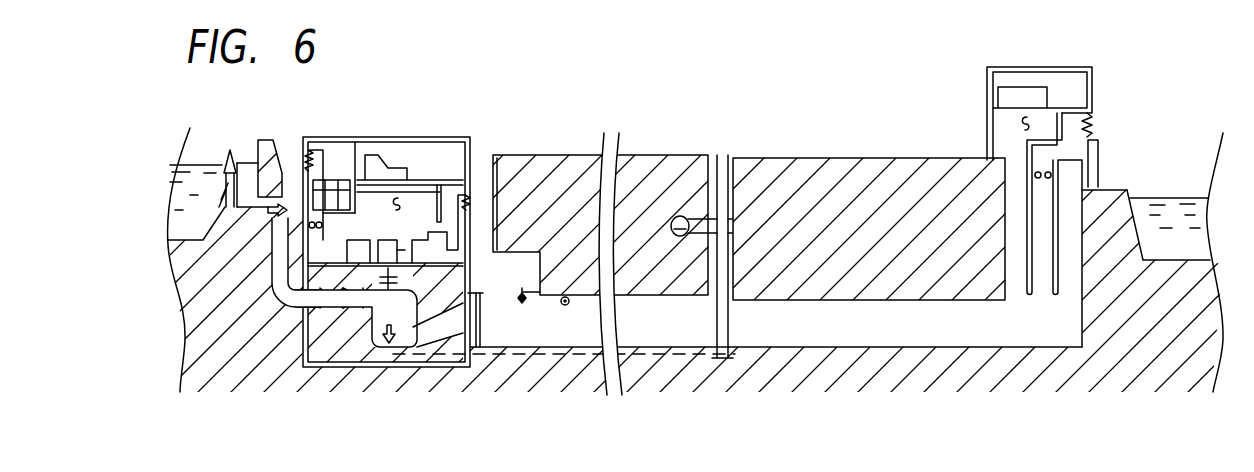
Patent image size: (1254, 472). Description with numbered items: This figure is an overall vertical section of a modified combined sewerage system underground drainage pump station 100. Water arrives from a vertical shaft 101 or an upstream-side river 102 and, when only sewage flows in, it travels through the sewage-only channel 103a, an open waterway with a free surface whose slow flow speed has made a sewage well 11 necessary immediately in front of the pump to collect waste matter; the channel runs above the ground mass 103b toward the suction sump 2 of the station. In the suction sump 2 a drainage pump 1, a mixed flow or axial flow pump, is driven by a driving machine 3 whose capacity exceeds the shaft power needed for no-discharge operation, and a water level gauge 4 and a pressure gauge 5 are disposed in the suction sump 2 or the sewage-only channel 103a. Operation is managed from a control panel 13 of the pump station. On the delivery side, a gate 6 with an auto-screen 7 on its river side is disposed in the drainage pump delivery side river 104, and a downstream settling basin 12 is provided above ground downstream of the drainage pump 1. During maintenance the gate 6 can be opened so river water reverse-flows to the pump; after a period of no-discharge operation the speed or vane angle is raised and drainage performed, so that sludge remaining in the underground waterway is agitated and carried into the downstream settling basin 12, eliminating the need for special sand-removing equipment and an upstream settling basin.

The drainage pump 1 is at (413, 350).
The suction sump 2 is at (510, 273).
The driving machine 3 is at (428, 253).
The water level gauge 4 is at (523, 305).
The pressure gauge 5 is at (565, 306).
The gate 6 is at (235, 177).
The auto-screen 7 is at (220, 178).
The sewage well 11 is at (443, 350).
The downstream settling basin 12 is at (248, 177).
The control panel 13 is at (373, 160).
The drainage pump station 100 is at (333, 353).
The vertical shaft 101 is at (723, 183).
The upstream-side river 102 is at (1167, 203).
The sewage-only channel 103a is at (807, 193).
The ground 103b is at (854, 330).
The drainage pump delivery side river 104 is at (197, 167).